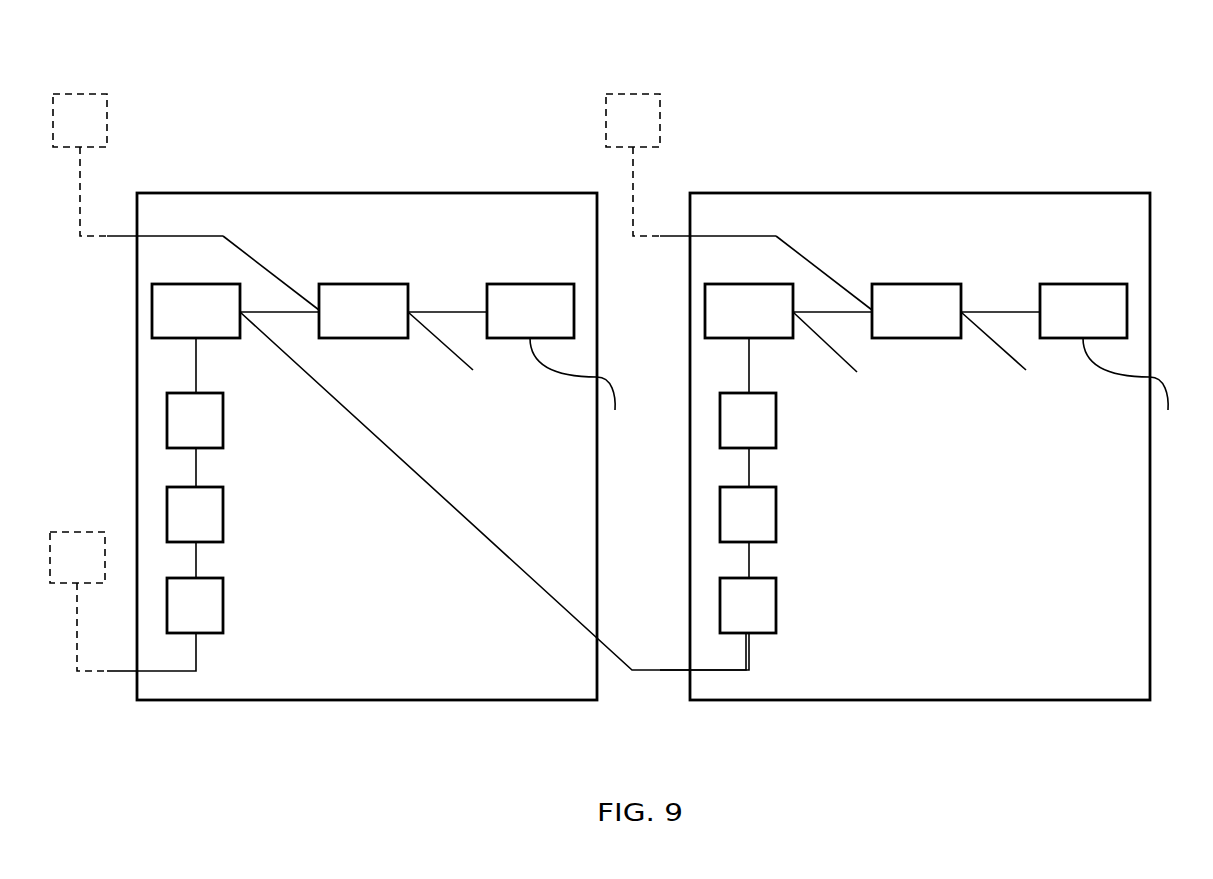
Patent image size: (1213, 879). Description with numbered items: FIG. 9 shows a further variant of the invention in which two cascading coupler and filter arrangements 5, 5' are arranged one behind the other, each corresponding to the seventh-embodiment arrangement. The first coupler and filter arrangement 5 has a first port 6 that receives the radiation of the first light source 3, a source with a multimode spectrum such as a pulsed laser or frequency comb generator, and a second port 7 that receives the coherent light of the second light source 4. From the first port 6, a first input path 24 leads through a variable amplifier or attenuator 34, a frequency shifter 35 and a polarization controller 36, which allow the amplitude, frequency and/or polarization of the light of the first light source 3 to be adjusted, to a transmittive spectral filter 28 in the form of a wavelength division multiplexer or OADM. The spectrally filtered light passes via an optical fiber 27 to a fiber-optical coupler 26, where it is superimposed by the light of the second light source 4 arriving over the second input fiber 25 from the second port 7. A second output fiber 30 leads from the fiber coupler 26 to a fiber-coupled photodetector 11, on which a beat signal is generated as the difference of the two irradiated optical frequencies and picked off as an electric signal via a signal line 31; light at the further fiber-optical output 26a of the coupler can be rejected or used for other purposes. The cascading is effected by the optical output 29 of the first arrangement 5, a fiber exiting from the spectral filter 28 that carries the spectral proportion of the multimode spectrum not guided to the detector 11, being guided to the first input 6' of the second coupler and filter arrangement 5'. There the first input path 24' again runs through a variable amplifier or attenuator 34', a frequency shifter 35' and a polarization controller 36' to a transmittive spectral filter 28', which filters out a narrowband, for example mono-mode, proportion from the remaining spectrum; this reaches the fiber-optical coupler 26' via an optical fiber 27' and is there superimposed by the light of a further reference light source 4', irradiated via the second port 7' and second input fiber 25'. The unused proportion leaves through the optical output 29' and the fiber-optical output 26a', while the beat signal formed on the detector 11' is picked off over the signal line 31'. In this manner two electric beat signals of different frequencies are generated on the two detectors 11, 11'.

The first light source 3 is at (86, 568).
The second light source 4 is at (80, 120).
The coupler and filter arrangement 5 is at (367, 405).
The first port 6 is at (110, 698).
The second port 7 is at (151, 191).
The photodetector 11 is at (530, 311).
The first input path 24 is at (191, 653).
The second input fiber 25 is at (271, 270).
The fiber-optical coupler 26 is at (363, 311).
The fiber-optical output 26a is at (440, 358).
The optical fiber 27 is at (279, 334).
The transmittive spectral filter 28 is at (196, 311).
The optical output 29 is at (493, 491).
The second output fiber 30 is at (438, 311).
The signal line 31 is at (587, 374).
The variable amplifier or attenuator 34 is at (195, 587).
The frequency shifter 35 is at (195, 495).
The polarization controller 36 is at (195, 393).
The further reference light source 4' is at (633, 120).
The second coupler and filter arrangement 5' is at (920, 405).
The first input 6' is at (663, 697).
The second port 7' is at (704, 191).
The detector 11' is at (1083, 311).
The first input path 24' is at (747, 653).
The second input fiber 25' is at (824, 270).
The fiber-optical coupler 26' is at (916, 311).
The fiber-optical output 26a' is at (993, 358).
The optical fiber 27' is at (833, 334).
The transmittive spectral filter 28' is at (749, 311).
The optical output 29' is at (825, 359).
The signal line 31' is at (1143, 374).
The variable amplifier or attenuator 34' is at (748, 587).
The frequency shifter 35' is at (748, 495).
The polarization controller 36' is at (748, 393).